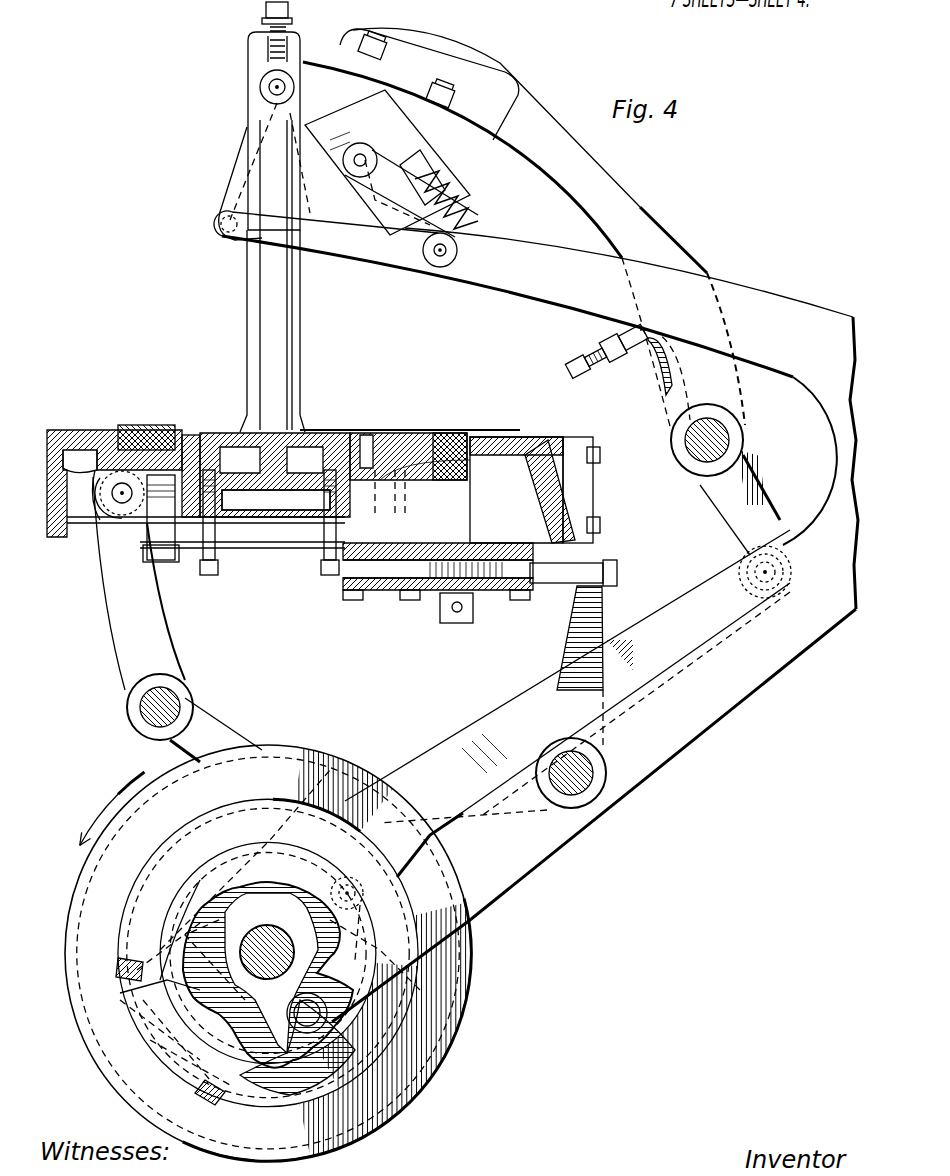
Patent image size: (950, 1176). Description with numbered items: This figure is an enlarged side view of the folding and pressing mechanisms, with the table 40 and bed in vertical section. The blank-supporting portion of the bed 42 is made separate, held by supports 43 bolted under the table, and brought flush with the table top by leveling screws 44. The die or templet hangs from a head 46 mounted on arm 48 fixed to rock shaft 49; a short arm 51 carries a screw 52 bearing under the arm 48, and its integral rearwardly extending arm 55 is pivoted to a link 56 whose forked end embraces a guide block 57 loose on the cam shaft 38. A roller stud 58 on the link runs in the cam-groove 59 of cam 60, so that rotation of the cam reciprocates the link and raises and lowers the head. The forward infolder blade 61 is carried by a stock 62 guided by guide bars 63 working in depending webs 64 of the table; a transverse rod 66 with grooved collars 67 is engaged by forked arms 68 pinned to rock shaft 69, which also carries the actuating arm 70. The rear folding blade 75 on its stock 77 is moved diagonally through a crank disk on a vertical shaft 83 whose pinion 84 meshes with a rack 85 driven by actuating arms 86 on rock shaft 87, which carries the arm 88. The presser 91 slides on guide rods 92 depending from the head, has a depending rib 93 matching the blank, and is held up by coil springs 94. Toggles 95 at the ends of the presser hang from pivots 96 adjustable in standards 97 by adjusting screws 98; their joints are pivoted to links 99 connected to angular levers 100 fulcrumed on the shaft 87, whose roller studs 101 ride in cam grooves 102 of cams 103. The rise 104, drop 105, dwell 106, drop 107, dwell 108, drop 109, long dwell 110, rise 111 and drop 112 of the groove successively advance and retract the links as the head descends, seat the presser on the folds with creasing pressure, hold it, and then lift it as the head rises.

The cam shaft 38 is at (200, 915).
The table 40 is at (65, 428).
The bed 42 is at (260, 520).
The supports 43 is at (290, 545).
The leveling screws 44 is at (208, 575).
The head 46 is at (385, 93).
The arm 48 is at (642, 195).
The rock shaft 49 is at (735, 440).
The short arm 51 is at (660, 370).
The screw 52 is at (575, 365).
The rearwardly extending arm 55 is at (722, 542).
The link 56 is at (488, 723).
The guide block 57 is at (300, 1130).
The roller stud 58 is at (472, 920).
The cam-groove 59 is at (455, 992).
The cam 60 is at (452, 1037).
The forward infolder blade 61 is at (190, 430).
The stock 62 is at (128, 425).
The guide bars 63 is at (78, 470).
The depending webs 64 is at (57, 540).
The transverse rod 66 is at (122, 505).
The grooved collars 67 is at (103, 505).
The arms 68 is at (118, 655).
The rock shaft 69 is at (140, 707).
The actuating arm 70 is at (218, 717).
The rear folding blade 75 is at (395, 432).
The stock 77 is at (448, 433).
The vertical shaft 83 is at (478, 520).
The actuating pinion 84 is at (470, 615).
The rack 85 is at (618, 572).
The actuating arm 86 is at (562, 668).
The rock shaft 87 is at (590, 785).
The arm 88 is at (395, 775).
The presser 91 is at (450, 212).
The guide rods 92 is at (480, 228).
The rib or flange 93 is at (330, 150).
The coil springs 94 is at (455, 190).
The toggles 95 is at (242, 150).
The pivots 96 is at (262, 87).
The standards 97 is at (247, 190).
The adjusting screws 98 is at (289, 8).
The links 99 is at (388, 260).
The angular levers 100 is at (778, 298).
The roller studs 101 is at (440, 1075).
The cam grooves 102 is at (380, 1085).
The cams 103 is at (355, 1130).
The rise 104 is at (315, 1065).
The drop 105 is at (230, 1095).
The dwell 106 is at (215, 1020).
The drop 107 is at (137, 980).
The dwell 108 is at (185, 932).
The drop 109 is at (207, 905).
The dwell 110 is at (293, 878).
The rise 111 is at (395, 935).
The drop 112 is at (320, 1025).